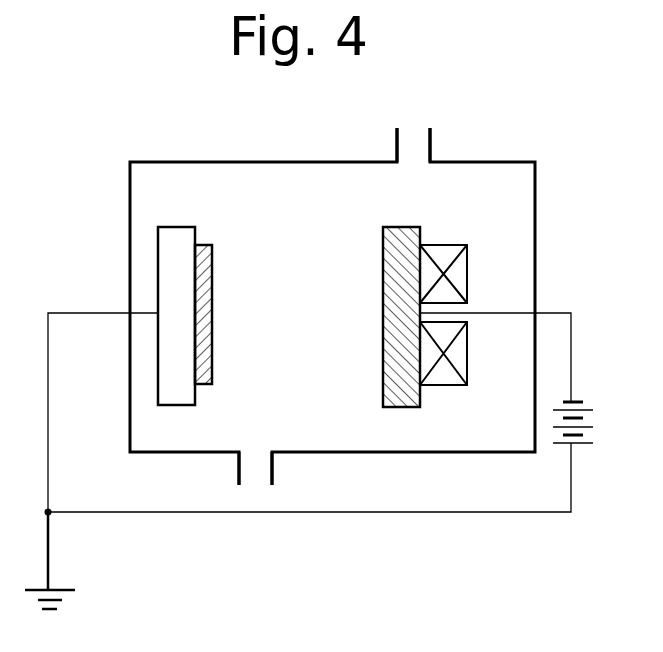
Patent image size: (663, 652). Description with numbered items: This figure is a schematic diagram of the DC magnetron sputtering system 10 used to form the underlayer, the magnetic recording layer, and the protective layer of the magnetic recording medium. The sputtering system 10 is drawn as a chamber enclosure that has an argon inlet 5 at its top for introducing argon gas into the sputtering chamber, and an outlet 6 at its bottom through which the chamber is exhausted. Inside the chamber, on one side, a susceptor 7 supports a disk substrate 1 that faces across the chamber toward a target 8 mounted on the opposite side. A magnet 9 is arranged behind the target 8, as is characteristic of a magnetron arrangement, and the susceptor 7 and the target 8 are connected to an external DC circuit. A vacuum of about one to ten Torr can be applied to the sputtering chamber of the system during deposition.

The sputtering system 10 is at (236, 157).
The argon inlet 5 is at (432, 140).
The outlet 6 is at (273, 470).
The susceptor 7 is at (177, 226).
The disk substrate 1 is at (199, 244).
The target 8 is at (398, 227).
The magnet 9 is at (467, 265).